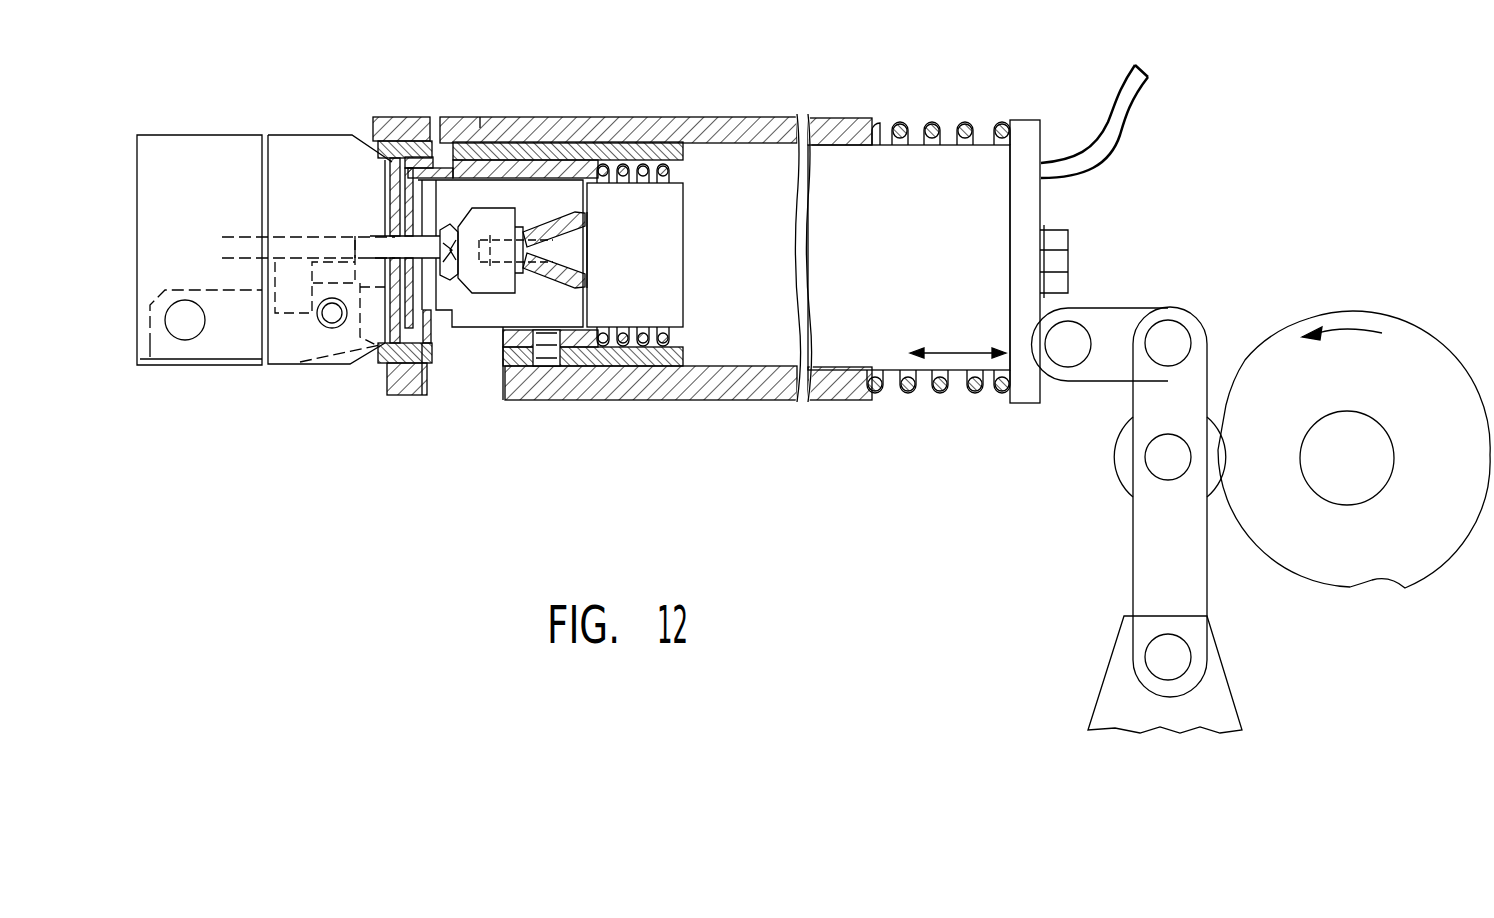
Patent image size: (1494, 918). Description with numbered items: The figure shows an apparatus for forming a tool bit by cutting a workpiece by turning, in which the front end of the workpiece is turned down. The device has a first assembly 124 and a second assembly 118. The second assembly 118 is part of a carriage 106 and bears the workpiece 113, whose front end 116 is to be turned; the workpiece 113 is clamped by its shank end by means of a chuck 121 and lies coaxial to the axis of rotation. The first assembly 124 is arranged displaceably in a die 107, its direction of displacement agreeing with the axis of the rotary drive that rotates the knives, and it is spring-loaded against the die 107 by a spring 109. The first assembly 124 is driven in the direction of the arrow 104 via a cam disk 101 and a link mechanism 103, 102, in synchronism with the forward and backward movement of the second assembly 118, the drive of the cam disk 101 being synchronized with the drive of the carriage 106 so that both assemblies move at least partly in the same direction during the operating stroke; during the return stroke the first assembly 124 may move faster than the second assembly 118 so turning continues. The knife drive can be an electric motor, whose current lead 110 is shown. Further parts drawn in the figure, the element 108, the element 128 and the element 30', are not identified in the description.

The cam disk 101 is at (1282, 358).
The link mechanism 102 is at (1210, 437).
The link mechanism 103 is at (1145, 397).
The arrow 104 is at (958, 325).
The carriage 106 is at (168, 171).
The die 107 is at (783, 142).
The piston 108 is at (910, 190).
The spring 109 is at (905, 387).
The current lead 110 is at (1117, 113).
The workpiece 113 is at (425, 247).
The front end 116 is at (433, 235).
The second assembly 118 is at (318, 160).
The chuck 121 is at (380, 343).
The first assembly 124 is at (554, 211).
The piston plunger 128 is at (643, 225).
The guide sleeve 30' is at (568, 198).